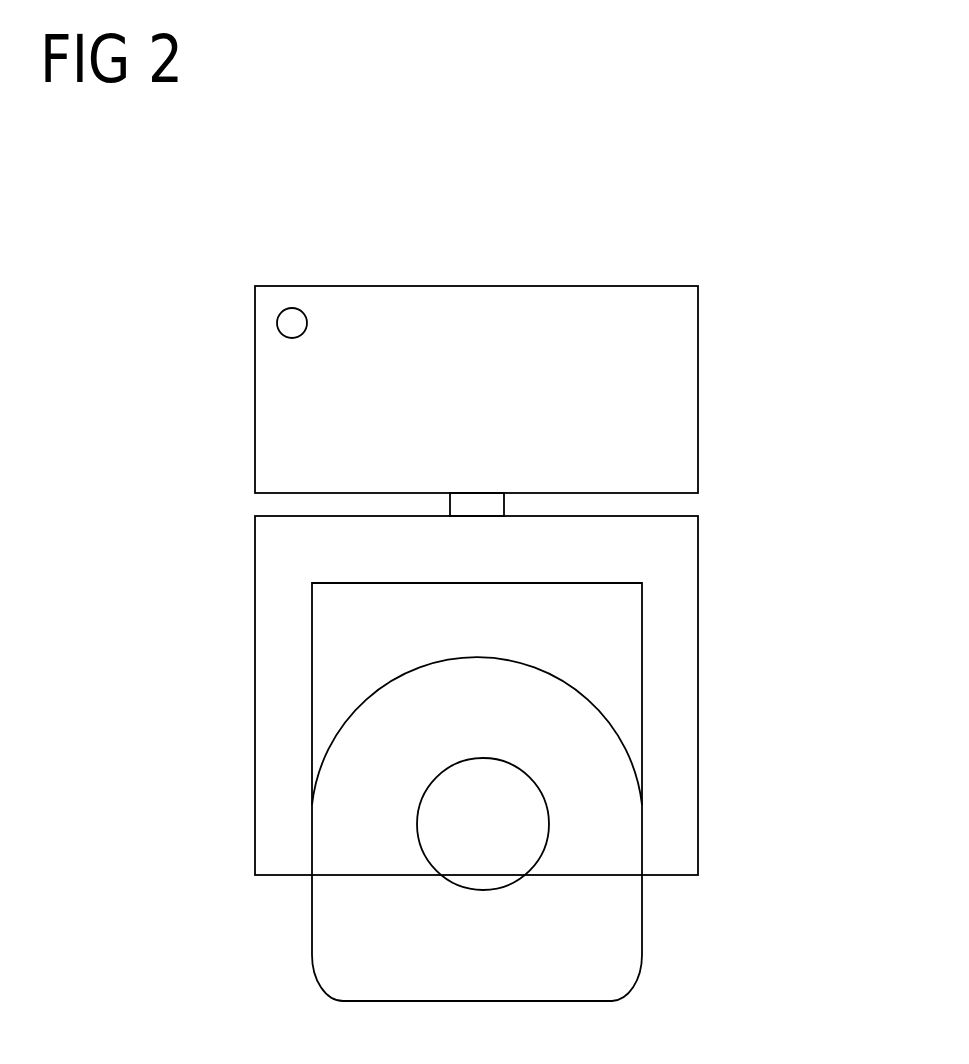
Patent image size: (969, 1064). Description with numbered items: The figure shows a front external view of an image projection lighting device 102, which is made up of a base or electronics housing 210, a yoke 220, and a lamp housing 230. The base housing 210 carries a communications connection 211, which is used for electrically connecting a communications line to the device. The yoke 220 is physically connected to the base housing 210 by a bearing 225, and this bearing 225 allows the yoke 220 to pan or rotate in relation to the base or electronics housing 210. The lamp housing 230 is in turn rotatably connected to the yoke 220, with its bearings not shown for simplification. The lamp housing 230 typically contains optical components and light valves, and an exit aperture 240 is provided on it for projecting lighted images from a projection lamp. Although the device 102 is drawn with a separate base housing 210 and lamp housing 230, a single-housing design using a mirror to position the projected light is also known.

The image projection lighting device 102 is at (793, 364).
The base or electronics housing 210 is at (320, 270).
The communications connection 211 is at (270, 330).
The yoke 220 is at (232, 708).
The bearing 225 is at (475, 498).
The lamp housing 230 is at (602, 693).
The exit aperture 240 is at (562, 812).